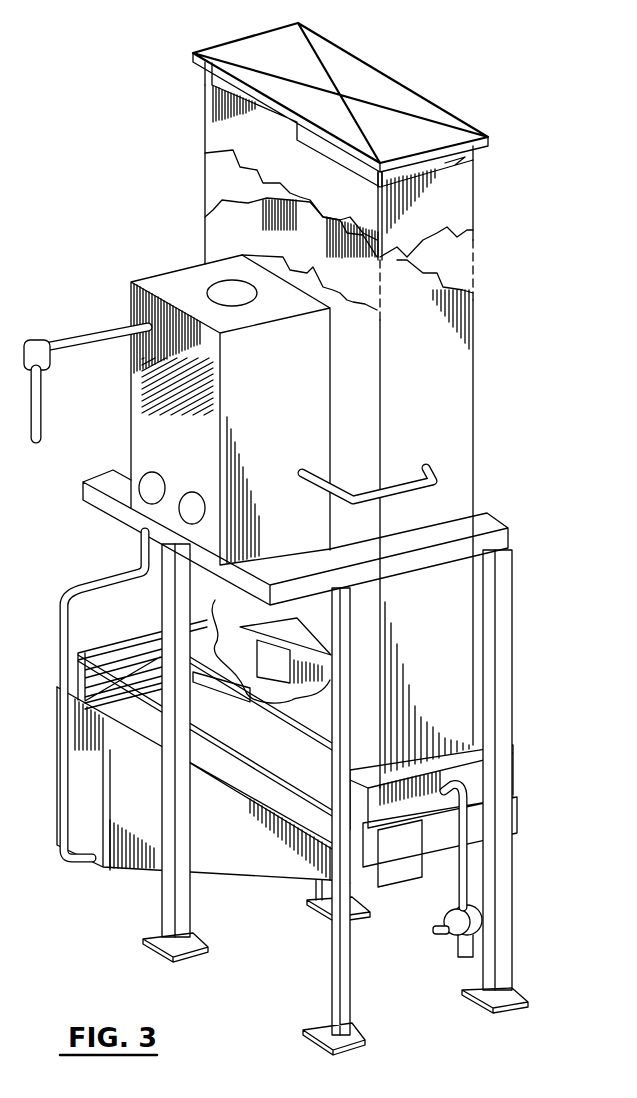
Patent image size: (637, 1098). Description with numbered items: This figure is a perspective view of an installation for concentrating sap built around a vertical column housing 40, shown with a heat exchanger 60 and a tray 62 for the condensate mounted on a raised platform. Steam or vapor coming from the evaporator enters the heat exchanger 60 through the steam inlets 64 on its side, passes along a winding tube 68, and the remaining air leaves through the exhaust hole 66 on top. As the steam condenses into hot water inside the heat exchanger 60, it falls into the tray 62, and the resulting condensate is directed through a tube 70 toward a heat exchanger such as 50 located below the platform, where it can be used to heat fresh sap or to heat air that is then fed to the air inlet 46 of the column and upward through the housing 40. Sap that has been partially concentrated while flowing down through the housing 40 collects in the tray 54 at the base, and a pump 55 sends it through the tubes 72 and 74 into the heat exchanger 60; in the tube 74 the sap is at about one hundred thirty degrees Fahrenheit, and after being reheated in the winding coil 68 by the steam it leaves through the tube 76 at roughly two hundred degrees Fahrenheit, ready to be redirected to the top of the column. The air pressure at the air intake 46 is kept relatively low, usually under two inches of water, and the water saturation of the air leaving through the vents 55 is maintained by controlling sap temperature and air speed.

The housing 40 is at (432, 421).
The air inlet 46 is at (290, 692).
The heat exchanger 50 is at (92, 792).
The tray 54 is at (482, 735).
The pump 55 is at (480, 155).
The heat exchanger 60 is at (290, 408).
The tray 62 is at (318, 567).
The steam inlets 64 is at (148, 472).
The exhaust hole 66 is at (210, 284).
The winding tube 68 is at (143, 385).
The tube 70 is at (93, 580).
The tube 72 is at (458, 884).
The tube 74 is at (70, 337).
The tube 76 is at (341, 488).